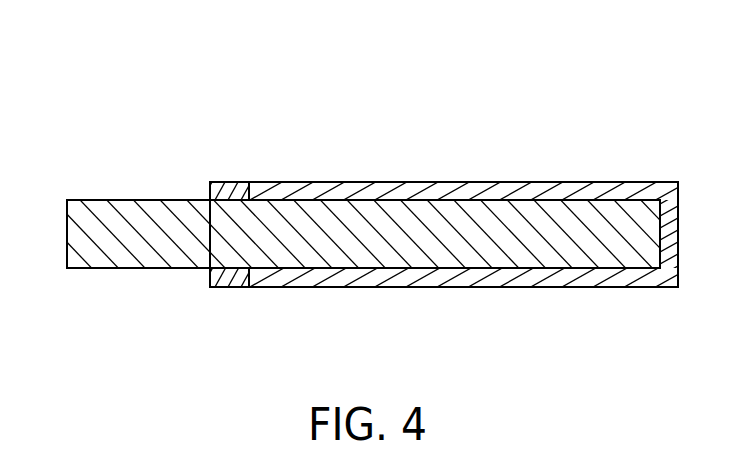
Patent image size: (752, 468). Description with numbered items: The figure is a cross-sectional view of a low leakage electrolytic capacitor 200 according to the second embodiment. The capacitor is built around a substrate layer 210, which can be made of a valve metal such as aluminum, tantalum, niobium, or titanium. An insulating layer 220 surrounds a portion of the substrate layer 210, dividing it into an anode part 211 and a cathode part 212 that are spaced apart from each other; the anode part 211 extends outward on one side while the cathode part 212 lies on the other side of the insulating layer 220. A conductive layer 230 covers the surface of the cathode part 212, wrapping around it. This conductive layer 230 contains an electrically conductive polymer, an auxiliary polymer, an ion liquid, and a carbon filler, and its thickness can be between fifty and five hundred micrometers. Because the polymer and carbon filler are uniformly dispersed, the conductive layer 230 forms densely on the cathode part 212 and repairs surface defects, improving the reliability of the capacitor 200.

The low leakage electrolytic capacitor 200 is at (712, 38).
The substrate layer 210 is at (91, 93).
The anode part 211 is at (143, 198).
The cathode part 212 is at (529, 208).
The insulating layer 220 is at (235, 278).
The conductive layer 230 is at (400, 190).